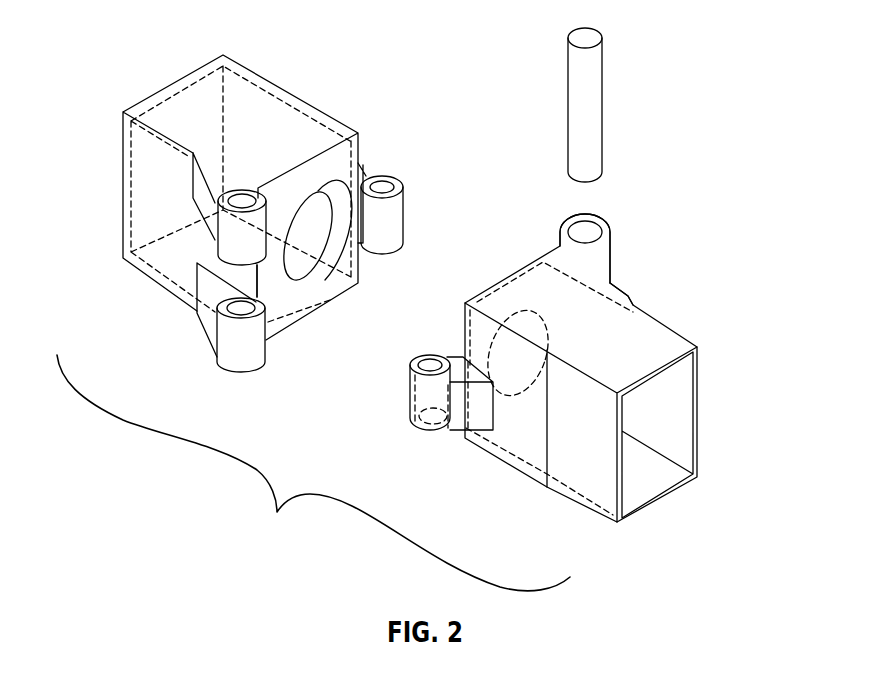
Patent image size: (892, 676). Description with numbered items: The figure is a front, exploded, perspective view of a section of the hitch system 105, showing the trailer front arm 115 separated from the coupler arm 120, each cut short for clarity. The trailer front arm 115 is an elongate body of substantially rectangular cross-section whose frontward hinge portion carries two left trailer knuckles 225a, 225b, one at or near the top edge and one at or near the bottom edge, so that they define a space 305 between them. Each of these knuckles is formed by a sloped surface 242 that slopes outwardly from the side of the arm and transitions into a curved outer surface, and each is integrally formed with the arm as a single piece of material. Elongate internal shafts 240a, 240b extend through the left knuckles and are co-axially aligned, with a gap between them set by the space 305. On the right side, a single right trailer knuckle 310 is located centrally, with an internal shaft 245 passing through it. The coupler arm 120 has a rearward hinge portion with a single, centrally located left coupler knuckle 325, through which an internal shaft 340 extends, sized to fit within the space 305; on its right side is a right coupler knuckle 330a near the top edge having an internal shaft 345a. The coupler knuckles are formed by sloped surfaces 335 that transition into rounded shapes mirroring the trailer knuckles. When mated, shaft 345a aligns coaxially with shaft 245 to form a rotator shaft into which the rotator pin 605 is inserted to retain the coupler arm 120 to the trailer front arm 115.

The hitch system 105 is at (313, 473).
The trailer front arm 115 is at (243, 57).
The coupler arm 120 is at (667, 294).
The left trailer knuckle 225a is at (234, 240).
The left trailer knuckle 225b is at (230, 378).
The internal shaft 240a is at (243, 204).
The internal shaft 240b is at (263, 309).
The sloped surface 242 is at (208, 198).
The internal shaft 245 is at (392, 178).
The space 305 is at (243, 275).
The right trailer knuckle 310 is at (413, 215).
The left coupler knuckle 325 is at (430, 438).
The right coupler knuckle 330a is at (612, 220).
The sloped surface 335 is at (613, 258).
The internal shaft 340 is at (432, 368).
The internal shaft 345a is at (585, 232).
The rotator pin 605 is at (598, 100).